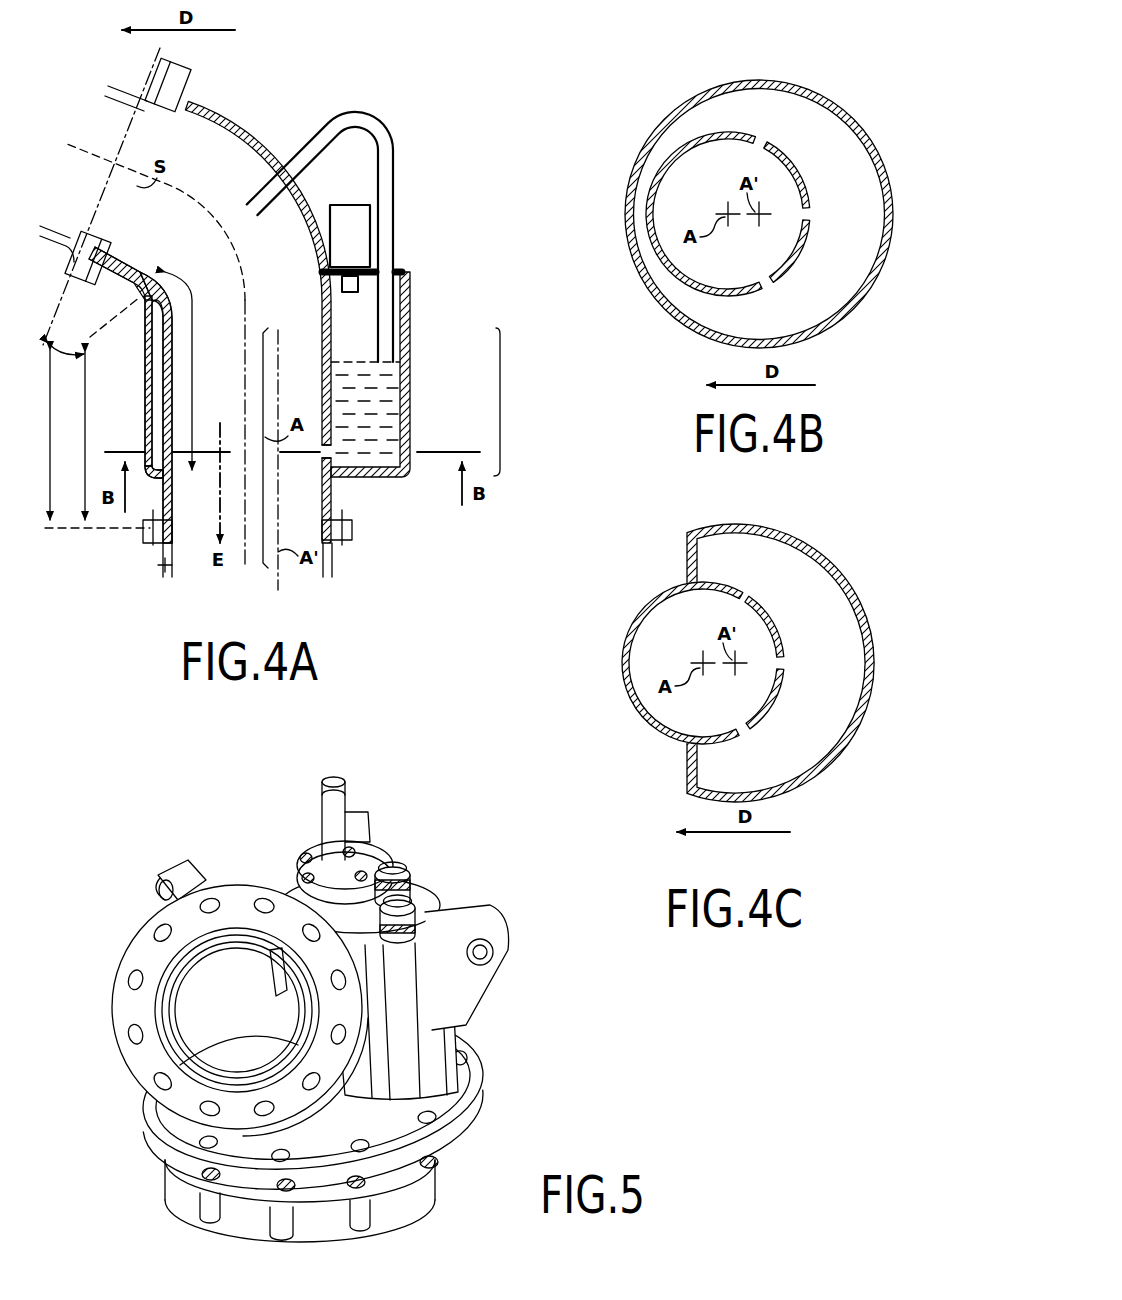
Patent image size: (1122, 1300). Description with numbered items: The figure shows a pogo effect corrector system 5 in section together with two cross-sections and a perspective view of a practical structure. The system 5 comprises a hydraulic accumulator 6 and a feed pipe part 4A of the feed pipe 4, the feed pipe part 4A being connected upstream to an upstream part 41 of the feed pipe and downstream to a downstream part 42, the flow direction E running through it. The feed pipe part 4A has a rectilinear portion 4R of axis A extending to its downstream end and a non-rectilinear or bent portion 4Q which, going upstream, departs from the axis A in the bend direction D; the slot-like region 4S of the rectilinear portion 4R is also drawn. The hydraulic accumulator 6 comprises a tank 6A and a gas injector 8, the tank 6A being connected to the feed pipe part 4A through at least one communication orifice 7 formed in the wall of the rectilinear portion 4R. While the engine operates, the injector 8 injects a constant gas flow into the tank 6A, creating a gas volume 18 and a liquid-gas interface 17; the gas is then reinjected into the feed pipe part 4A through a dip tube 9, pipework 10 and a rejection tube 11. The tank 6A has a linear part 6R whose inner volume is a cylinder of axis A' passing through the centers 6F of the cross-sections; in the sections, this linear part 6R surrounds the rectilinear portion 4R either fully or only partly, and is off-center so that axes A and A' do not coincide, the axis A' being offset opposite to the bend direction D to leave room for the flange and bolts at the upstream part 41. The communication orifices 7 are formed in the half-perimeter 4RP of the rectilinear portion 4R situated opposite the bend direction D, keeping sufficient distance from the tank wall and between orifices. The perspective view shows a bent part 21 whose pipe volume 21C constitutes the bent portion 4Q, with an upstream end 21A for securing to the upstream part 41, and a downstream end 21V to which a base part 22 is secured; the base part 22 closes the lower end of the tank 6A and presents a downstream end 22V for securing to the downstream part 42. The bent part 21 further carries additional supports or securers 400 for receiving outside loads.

In FIG. 4A, the feed pipe 4 is at (242, 131).
In FIG. 4A, the feed pipe part 4A is at (205, 122).
In FIG. 4A, the rectilinear portion 4R is at (128, 395).
In FIG. 4B, the rectilinear portion 4R is at (650, 213).
In FIG. 4C, the rectilinear portion 4R is at (620, 660).
In FIG. 4B, the half-perimeter 4RP is at (717, 130).
In FIG. 4C, the half-perimeter 4RP is at (690, 760).
In FIG. 4A, the non-rectilinear portion 4Q is at (69, 332).
In FIG. 4A, the slot 4S is at (194, 371).
In FIG. 4A, the pogo effect corrector system 5 is at (481, 125).
In FIG. 4A, the hydraulic accumulator 6 is at (418, 383).
In FIG. 4A, the tank 6A is at (410, 412).
In FIG. 4B, the tank 6A is at (848, 110).
In FIG. 4C, the tank 6A is at (837, 560).
In FIG. 4A, the linear part of the tank 6R is at (504, 402).
In FIG. 4B, the linear part of the tank 6R is at (759, 197).
In FIG. 4C, the linear part of the tank 6R is at (797, 663).
In FIG. 4A, the center of cross-section 6F is at (352, 338).
In FIG. 4B, the center of cross-section 6F is at (747, 108).
In FIG. 4C, the center of cross-section 6F is at (820, 717).
In FIG. 4A, the communication orifice 7 is at (320, 457).
In FIG. 4B, the communication orifice 7 is at (767, 143).
In FIG. 4C, the communication orifice 7 is at (742, 592).
In FIG. 4A, the gas injector 8 is at (349, 213).
In FIG. 4A, the dip tube 9 is at (398, 302).
In FIG. 4A, the pipework 10 is at (393, 142).
In FIG. 4A, the rejection tube 11 is at (318, 122).
In FIG. 5, the rejection tube 11 is at (268, 967).
In FIG. 4A, the liquid-gas interface 17 is at (399, 362).
In FIG. 4A, the gas volume 18 is at (400, 330).
In FIG. 4A, the upstream part of the feed pipe 41 is at (108, 86).
In FIG. 4A, the downstream part of the feed pipe 42 is at (160, 566).
In FIG. 5, the bent part 21 is at (432, 1023).
In FIG. 5, the upstream end of the pipe volume 21A is at (150, 958).
In FIG. 5, the pipe volume 21C is at (208, 1012).
In FIG. 5, the downstream end of the bent part 21V is at (458, 1130).
In FIG. 5, the base part 22 is at (435, 1200).
In FIG. 5, the downstream end of the base part 22V is at (397, 1216).
In FIG. 5, the supports or securers 400 is at (182, 860).